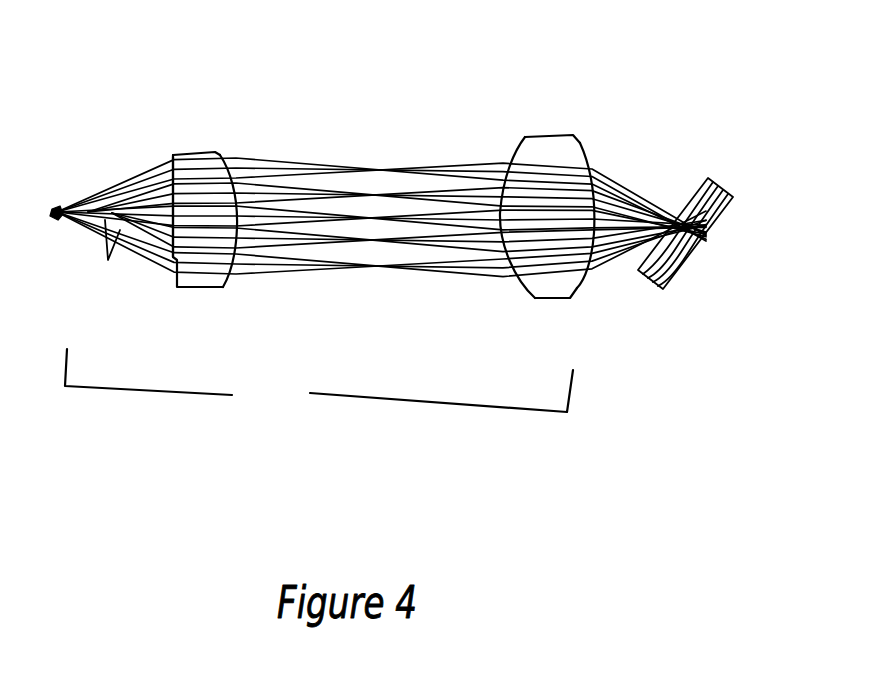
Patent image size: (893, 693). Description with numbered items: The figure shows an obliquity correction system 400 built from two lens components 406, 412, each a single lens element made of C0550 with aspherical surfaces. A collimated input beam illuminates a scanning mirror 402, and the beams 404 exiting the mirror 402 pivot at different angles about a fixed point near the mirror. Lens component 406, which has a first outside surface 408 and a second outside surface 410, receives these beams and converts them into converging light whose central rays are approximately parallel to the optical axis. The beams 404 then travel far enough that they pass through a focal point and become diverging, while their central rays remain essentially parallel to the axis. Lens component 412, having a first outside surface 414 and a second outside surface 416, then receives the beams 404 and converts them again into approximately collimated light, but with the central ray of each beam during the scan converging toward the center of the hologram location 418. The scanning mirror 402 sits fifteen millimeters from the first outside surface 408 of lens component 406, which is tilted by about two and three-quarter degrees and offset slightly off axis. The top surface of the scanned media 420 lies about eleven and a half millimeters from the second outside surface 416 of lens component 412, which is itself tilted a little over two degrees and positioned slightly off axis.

The obliquity correction system 400 is at (381, 285).
The scanning mirror 402 is at (63, 203).
The beams 404 is at (117, 257).
The lens component 406 is at (192, 153).
The first outside surface 408 is at (172, 160).
The second outside surface 410 is at (223, 158).
The lens component 412 is at (548, 132).
The first outside surface 414 is at (523, 147).
The second outside surface 416 is at (626, 190).
The hologram location 418 is at (684, 214).
The scanned media 420 is at (727, 183).